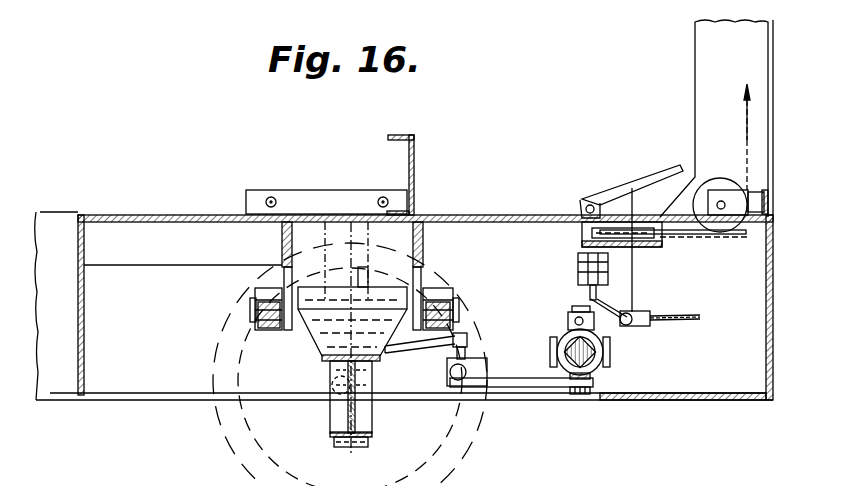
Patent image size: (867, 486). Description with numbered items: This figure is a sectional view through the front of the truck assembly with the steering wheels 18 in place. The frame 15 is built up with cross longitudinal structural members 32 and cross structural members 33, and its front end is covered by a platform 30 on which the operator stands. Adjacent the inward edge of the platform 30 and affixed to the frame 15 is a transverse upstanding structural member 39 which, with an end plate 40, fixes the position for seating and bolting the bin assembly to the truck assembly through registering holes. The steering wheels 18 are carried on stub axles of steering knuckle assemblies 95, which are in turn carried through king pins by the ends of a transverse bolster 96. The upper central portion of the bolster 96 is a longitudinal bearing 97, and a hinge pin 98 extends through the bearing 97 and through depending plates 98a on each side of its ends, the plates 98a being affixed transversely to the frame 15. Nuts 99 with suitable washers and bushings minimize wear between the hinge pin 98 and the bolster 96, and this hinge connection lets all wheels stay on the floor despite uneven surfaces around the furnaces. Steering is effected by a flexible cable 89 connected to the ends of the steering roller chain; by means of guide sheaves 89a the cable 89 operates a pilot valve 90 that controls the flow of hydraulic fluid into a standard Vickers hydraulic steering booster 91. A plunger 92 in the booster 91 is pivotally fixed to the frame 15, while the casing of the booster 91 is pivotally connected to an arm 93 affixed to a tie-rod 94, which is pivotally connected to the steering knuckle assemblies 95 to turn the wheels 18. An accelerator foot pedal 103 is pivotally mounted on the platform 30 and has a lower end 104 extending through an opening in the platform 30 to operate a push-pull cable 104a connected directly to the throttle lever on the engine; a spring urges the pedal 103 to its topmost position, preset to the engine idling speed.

The frame 15 is at (671, 378).
The steering wheels 18 is at (491, 433).
The platform 30 is at (526, 216).
The cross longitudinal structural member 32 is at (181, 268).
The cross structural member 33 is at (85, 336).
The transverse upstanding structural member 39 is at (414, 167).
The end plate 40 is at (328, 190).
The flexible cable 89 is at (747, 116).
The guide sheaves 89a is at (727, 232).
The pilot valve 90 is at (606, 360).
The hydraulic steering booster 91 is at (606, 352).
The plunger 92 is at (556, 350).
The arm 93 is at (548, 378).
The tie-rod 94 is at (470, 353).
The steering knuckle assembly 95 is at (362, 447).
The transverse bolster 96 is at (356, 421).
The longitudinal bearing 97 is at (422, 292).
The hinge pin 98 is at (455, 303).
The depending plates 98a is at (282, 246).
The nuts 99 is at (258, 320).
The accelerator foot pedal 103 is at (648, 176).
The lower end 104 is at (630, 283).
The push-pull cable 104a is at (675, 320).